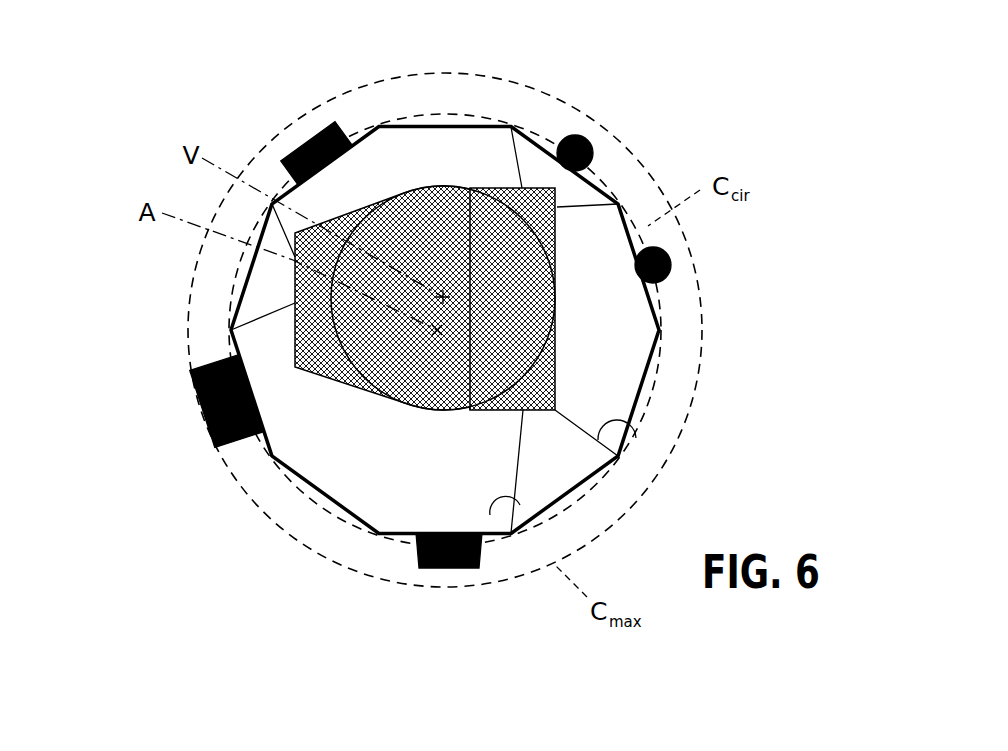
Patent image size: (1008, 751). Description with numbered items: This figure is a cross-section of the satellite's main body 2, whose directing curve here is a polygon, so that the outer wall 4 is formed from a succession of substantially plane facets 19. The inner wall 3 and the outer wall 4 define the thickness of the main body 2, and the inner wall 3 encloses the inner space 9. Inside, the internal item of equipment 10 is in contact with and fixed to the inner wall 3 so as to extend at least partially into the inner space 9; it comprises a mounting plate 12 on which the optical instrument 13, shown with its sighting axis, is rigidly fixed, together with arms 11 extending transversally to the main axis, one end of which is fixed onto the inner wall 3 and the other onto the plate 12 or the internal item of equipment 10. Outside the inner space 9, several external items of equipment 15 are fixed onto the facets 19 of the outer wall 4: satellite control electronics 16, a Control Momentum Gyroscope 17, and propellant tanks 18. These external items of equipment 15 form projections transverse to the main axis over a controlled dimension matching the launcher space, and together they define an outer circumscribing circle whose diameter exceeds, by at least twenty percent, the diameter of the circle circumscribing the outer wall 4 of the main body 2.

The main body 2 is at (436, 332).
The inner wall 3 is at (628, 408).
The outer wall 4 is at (644, 382).
The inner space 9 is at (449, 464).
The internal item of equipment 10 is at (374, 287).
The arms 11 is at (636, 438).
The mounting plate 12 is at (557, 247).
The optical instrument 13 is at (427, 188).
The external item of equipment 15 is at (451, 363).
The satellite control electronics 16 is at (306, 140).
The Control Momentum Gyroscope 17 is at (448, 569).
The propellant tank 18 is at (590, 138).
The plane facets 19 is at (366, 130).